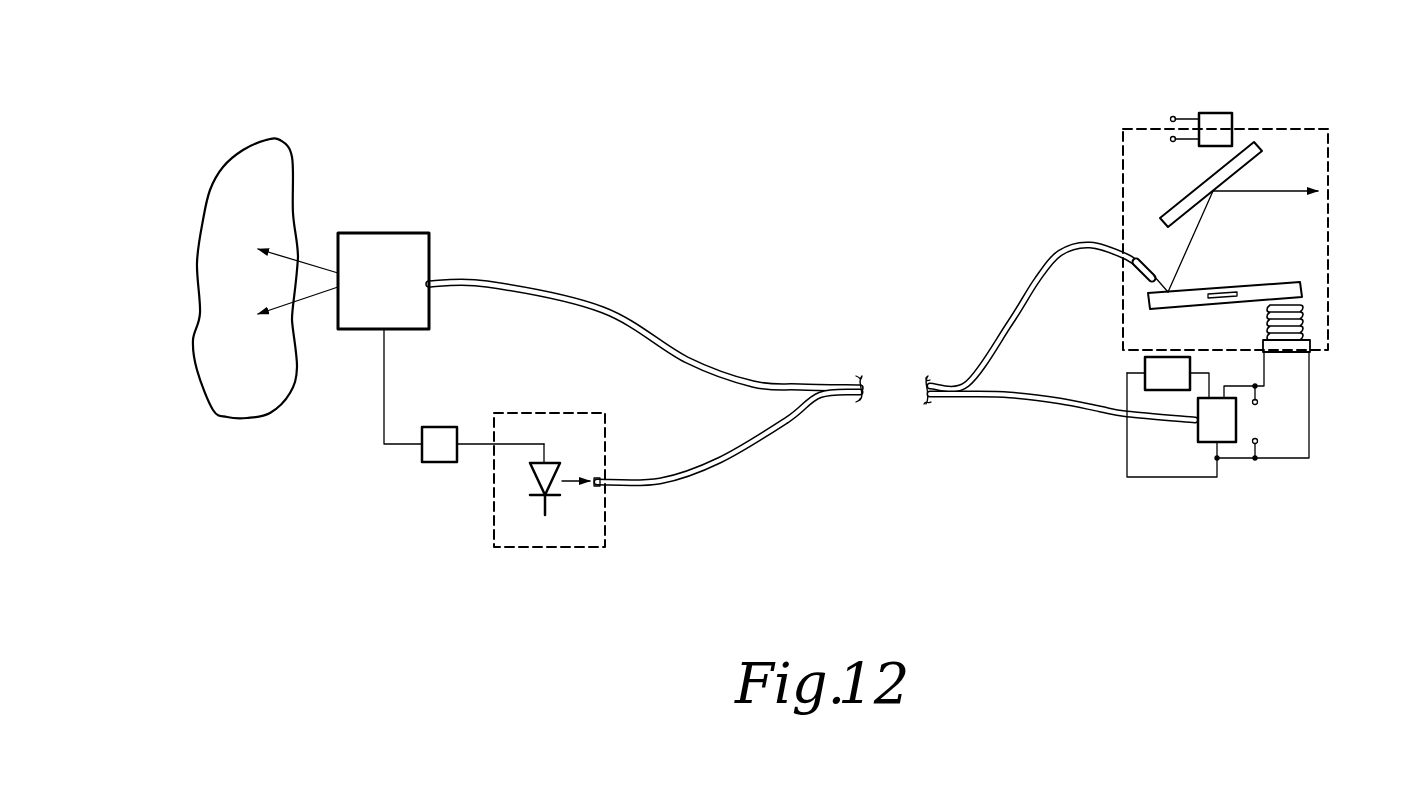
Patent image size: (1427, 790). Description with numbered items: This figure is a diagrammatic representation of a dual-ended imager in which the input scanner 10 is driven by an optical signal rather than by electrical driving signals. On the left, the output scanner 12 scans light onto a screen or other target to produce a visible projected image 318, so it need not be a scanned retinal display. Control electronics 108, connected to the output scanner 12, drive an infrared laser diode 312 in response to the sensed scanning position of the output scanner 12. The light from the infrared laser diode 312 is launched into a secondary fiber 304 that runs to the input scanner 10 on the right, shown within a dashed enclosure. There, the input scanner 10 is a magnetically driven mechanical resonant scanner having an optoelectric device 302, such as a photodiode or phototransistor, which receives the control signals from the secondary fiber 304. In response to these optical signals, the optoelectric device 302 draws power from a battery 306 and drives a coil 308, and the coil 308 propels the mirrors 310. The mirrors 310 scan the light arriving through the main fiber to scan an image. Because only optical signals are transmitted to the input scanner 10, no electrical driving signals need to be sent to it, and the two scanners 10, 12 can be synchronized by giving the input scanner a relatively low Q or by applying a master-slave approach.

The input scanner 10 is at (1290, 129).
The output scanner 12 is at (382, 232).
The control electronics 108 is at (442, 463).
The optoelectric device 302 is at (1200, 437).
The secondary fiber 304 is at (1030, 405).
The battery 306 is at (1145, 365).
The coil 308 is at (1212, 113).
The mirrors 310 is at (1165, 205).
The infrared laser diode 312 is at (535, 486).
The projected image 318 is at (230, 158).